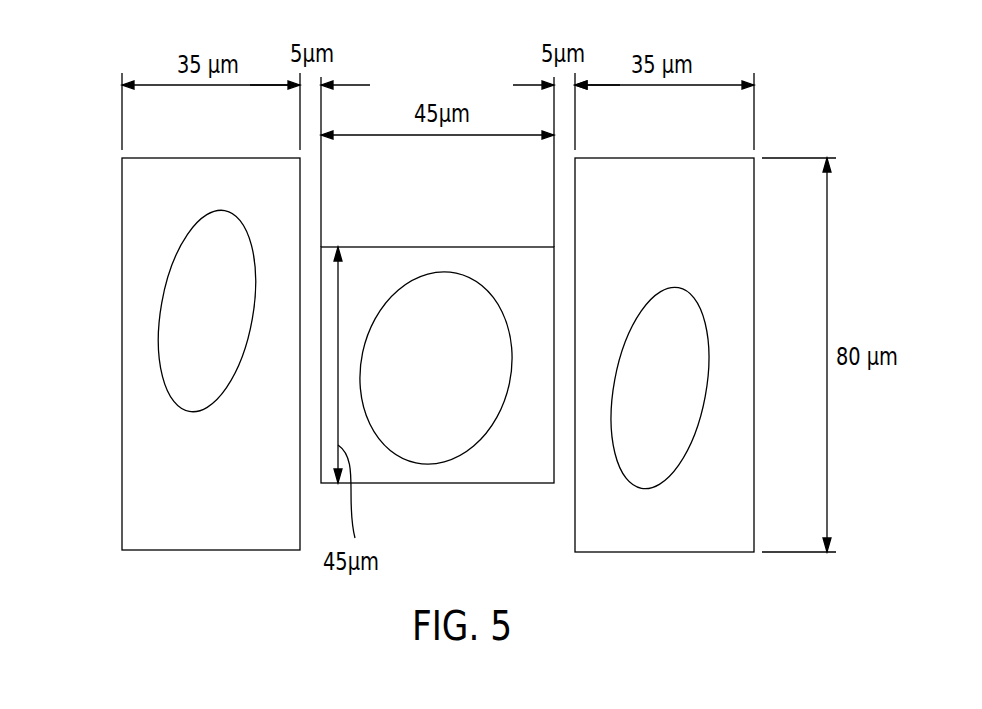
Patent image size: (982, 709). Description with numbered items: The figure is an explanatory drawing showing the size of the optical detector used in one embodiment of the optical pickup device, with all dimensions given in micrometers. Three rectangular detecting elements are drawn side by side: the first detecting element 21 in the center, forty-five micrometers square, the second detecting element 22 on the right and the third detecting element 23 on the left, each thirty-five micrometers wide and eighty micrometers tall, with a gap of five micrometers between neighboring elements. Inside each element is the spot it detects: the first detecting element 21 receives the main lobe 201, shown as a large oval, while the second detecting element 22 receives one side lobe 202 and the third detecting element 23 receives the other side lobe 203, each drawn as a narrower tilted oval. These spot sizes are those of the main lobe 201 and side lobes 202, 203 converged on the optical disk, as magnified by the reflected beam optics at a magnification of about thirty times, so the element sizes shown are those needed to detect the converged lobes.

The first detecting element 21 is at (512, 463).
The second detecting element 22 is at (723, 543).
The third detecting element 23 is at (137, 404).
The main lobe 201 is at (408, 463).
The side lobe 202 is at (642, 488).
The side lobe 203 is at (163, 313).